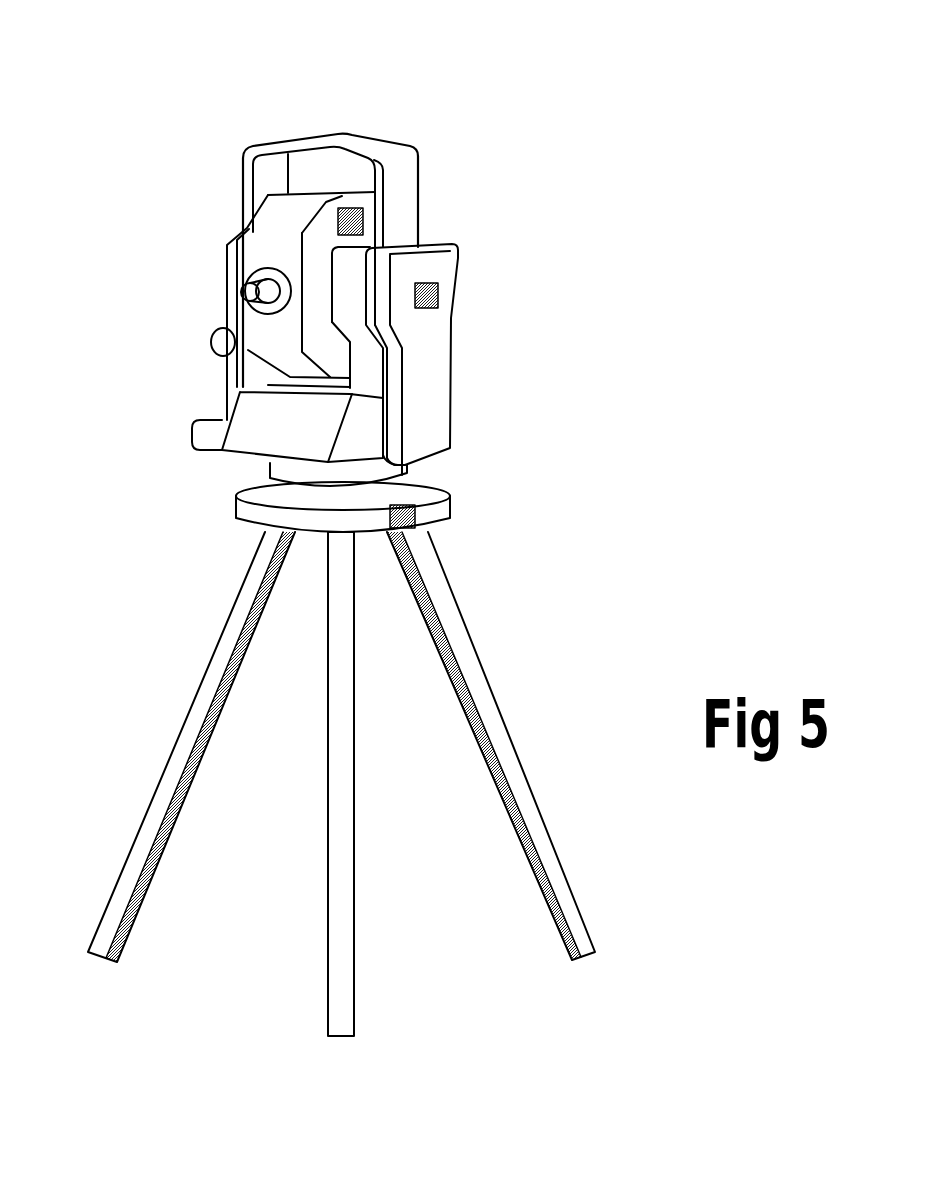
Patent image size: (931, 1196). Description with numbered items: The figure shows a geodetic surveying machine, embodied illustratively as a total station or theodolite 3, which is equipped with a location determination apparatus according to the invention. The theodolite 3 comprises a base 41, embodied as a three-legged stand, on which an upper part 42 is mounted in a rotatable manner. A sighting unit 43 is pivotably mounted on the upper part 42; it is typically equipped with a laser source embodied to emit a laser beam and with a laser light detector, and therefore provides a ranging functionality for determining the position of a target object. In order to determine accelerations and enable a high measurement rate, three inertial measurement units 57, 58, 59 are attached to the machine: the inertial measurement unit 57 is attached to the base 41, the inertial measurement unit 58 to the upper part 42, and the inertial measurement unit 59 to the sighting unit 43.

The theodolite 3 is at (327, 526).
The base 41 is at (250, 522).
The upper part 42 is at (422, 353).
The sighting unit 43 is at (307, 308).
The inertial measurement unit 57 is at (412, 520).
The inertial measurement unit 58 is at (430, 298).
The inertial measurement unit 59 is at (357, 223).